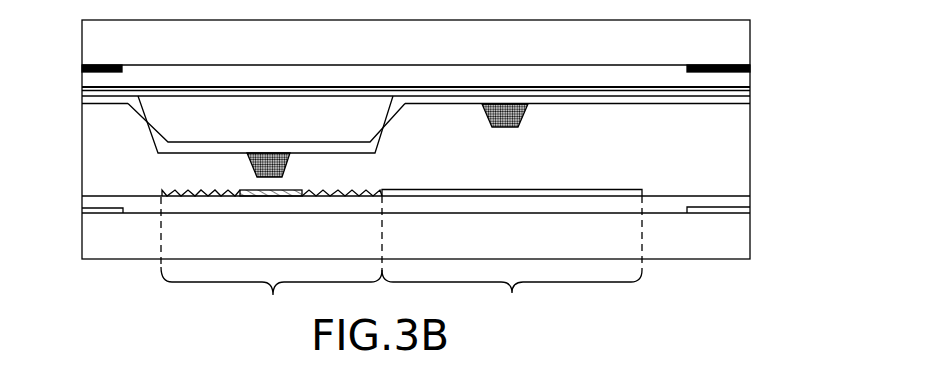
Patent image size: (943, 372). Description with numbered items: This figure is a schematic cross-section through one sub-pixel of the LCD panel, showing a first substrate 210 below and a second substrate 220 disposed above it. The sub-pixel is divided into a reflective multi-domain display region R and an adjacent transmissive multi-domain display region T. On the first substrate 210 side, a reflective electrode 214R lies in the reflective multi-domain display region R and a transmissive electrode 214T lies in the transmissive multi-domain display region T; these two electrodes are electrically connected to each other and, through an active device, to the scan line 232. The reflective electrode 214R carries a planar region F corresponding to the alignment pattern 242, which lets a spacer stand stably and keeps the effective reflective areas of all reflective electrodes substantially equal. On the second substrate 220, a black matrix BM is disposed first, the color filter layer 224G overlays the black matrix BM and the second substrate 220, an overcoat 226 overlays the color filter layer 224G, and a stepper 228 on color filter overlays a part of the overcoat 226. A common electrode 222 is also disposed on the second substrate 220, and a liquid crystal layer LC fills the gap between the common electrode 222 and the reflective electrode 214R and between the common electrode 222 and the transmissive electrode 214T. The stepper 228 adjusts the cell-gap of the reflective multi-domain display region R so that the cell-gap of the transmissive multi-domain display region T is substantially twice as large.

The second substrate 220 is at (697, 53).
The black matrix BM is at (93, 66).
The color filter layer 224G is at (416, 77).
The overcoat 226 is at (88, 89).
The common electrode 222 is at (742, 98).
The stepper on color filter 228 is at (172, 115).
The alignment pattern 242 is at (285, 165).
The liquid crystal layer LC is at (745, 153).
The first substrate 210 is at (698, 245).
The scan line 232 is at (82, 212).
The reflective electrode 214R is at (380, 190).
The planar region F is at (240, 190).
The transmissive electrode 214T is at (507, 190).
The reflective multi-domain display region R is at (271, 258).
The transmissive multi-domain display region T is at (512, 258).